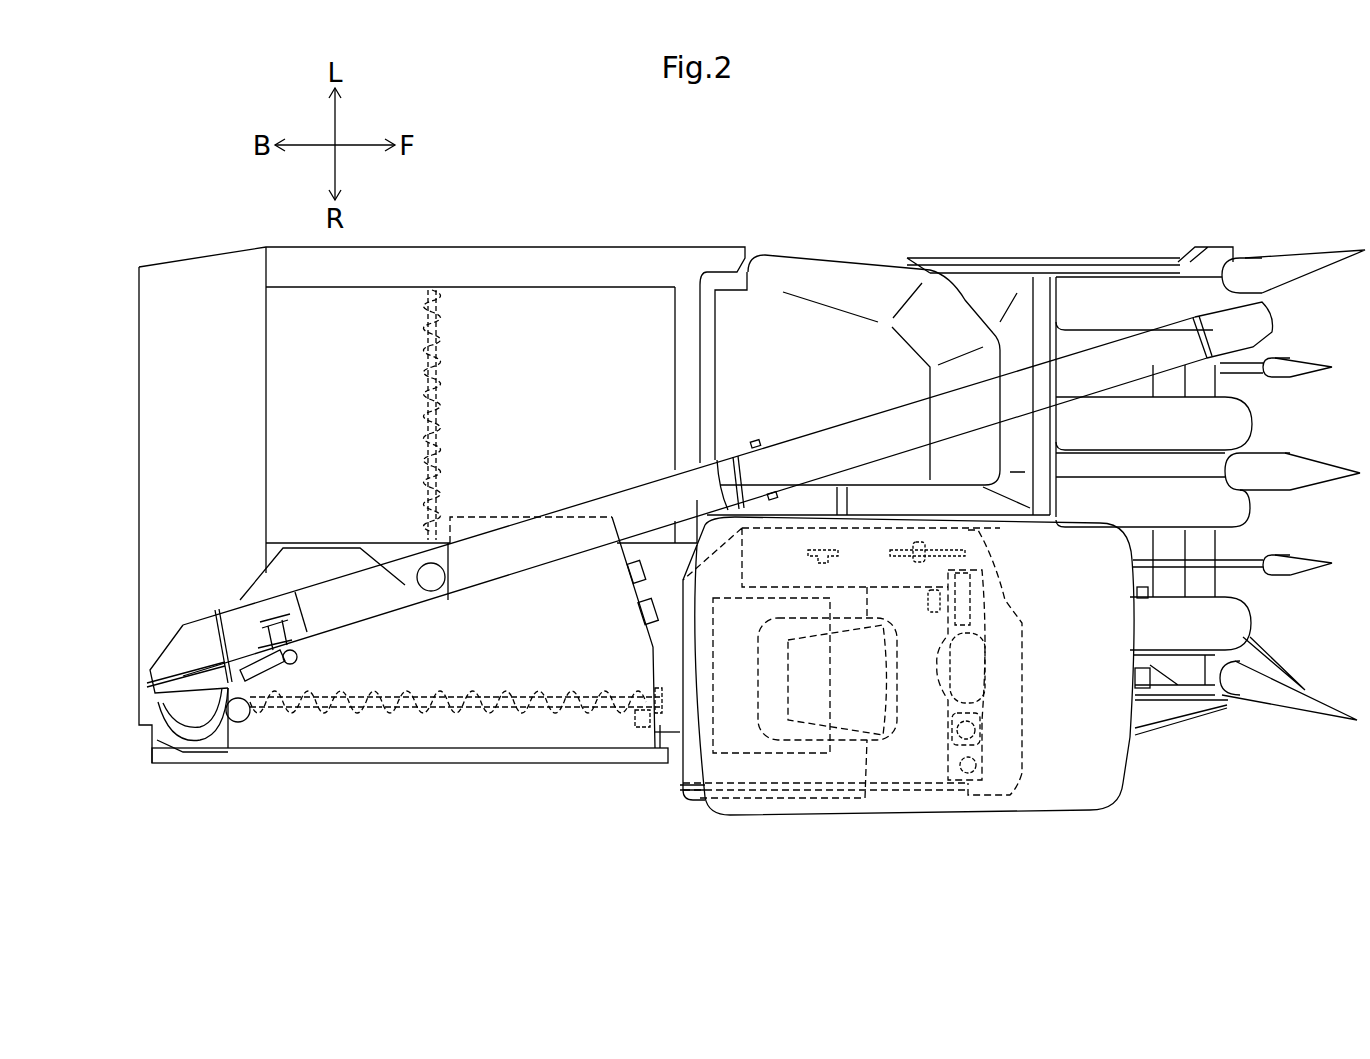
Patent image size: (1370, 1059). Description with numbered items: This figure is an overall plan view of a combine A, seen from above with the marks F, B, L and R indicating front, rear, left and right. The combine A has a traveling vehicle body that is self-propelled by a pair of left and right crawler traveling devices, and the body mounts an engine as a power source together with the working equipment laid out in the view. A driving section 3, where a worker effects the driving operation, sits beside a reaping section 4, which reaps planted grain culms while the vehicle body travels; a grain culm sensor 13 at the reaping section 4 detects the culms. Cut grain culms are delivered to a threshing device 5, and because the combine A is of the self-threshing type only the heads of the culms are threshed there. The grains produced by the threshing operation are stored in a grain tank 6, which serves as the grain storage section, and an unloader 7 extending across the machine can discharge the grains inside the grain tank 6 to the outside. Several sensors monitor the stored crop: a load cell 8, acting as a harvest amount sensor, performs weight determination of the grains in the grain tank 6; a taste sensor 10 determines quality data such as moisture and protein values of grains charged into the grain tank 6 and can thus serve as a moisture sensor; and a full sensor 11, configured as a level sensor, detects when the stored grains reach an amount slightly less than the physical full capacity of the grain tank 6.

The combine A is at (1198, 158).
The driving section 3 is at (1087, 812).
The reaping section 4 is at (1312, 740).
The threshing device 5 is at (507, 245).
The grain tank 6 is at (418, 735).
The unloader 7 is at (826, 440).
The load cell 8 is at (643, 727).
The taste sensor 10 is at (647, 617).
The full sensor 11 is at (638, 562).
The grain culm sensor 13 is at (1141, 598).